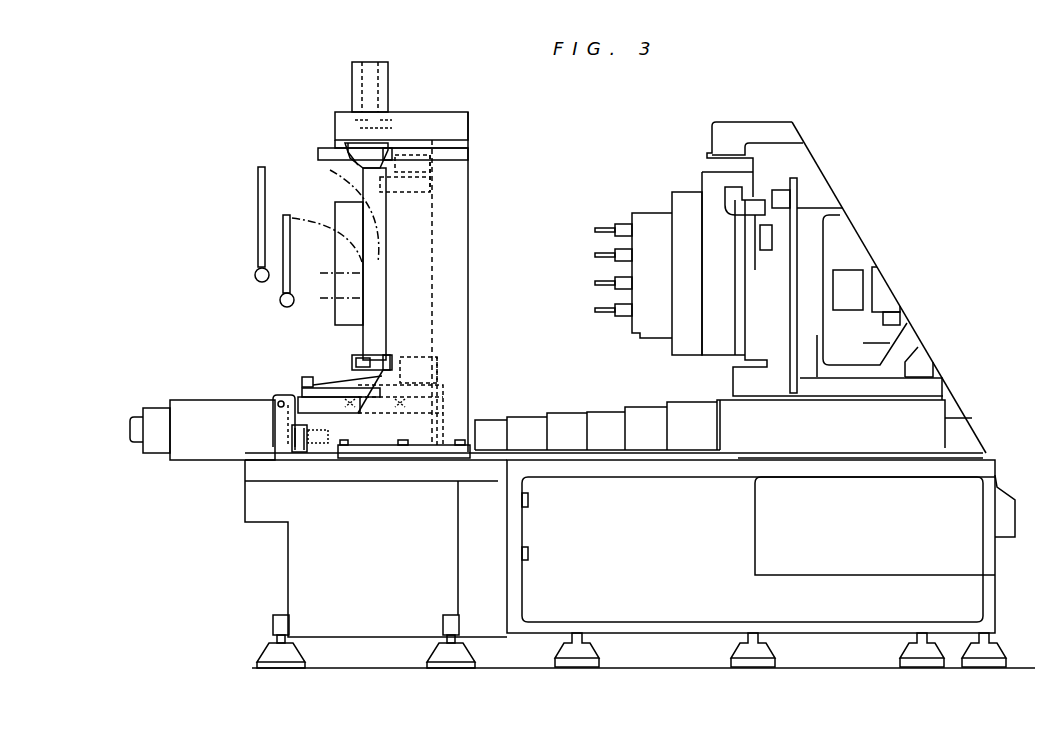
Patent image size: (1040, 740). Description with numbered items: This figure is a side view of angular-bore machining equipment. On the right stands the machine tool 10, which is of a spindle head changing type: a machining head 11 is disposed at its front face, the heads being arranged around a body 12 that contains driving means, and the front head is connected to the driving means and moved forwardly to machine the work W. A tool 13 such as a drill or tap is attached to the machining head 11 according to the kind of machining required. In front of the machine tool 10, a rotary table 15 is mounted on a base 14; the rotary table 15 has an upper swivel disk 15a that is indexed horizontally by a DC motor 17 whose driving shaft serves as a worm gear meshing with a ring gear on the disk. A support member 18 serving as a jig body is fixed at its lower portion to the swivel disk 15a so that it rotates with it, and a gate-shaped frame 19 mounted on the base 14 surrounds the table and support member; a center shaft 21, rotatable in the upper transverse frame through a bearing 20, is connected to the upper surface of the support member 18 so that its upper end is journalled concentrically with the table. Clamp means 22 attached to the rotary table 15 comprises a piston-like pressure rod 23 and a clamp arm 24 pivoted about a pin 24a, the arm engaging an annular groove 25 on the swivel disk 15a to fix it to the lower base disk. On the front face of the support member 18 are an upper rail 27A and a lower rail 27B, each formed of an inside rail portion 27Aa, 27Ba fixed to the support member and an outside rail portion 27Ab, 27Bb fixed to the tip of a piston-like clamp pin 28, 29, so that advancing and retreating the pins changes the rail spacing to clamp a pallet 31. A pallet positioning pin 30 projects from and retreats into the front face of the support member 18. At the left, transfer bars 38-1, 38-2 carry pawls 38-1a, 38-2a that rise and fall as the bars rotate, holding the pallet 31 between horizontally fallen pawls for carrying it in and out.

The machine tool 10 is at (772, 110).
The machining head 11 is at (687, 200).
The body 12 is at (857, 252).
The tool 13 is at (592, 262).
The base 14 is at (293, 552).
The rotary table 15 is at (342, 432).
The swivel disk 15a is at (312, 382).
The DC motor 17 is at (177, 435).
The support member 18 is at (432, 235).
The gate-shaped frame 19 is at (460, 127).
The bearing 20 is at (386, 65).
The center shaft 21 is at (360, 83).
The clamp means 22 is at (282, 440).
The pressure rod 23 is at (316, 445).
The clamp arm 24 is at (275, 443).
The pin 24a is at (280, 405).
The annular groove 25 is at (300, 392).
The upper rail 27A is at (348, 142).
The outside rail portion 27Ab is at (327, 117).
The inside rail portion 27Aa is at (392, 153).
The lower rail 27B is at (353, 357).
The outside rail portion 27Bb is at (335, 349).
The inside rail portion 27Ba is at (390, 357).
The clamp pin 28 is at (402, 162).
The clamp pin 29 is at (425, 383).
The pallet positioning pin 30 is at (405, 180).
The pallet 31 is at (363, 182).
The transfer bar 38-1 is at (255, 275).
The pawl 38-1a is at (258, 190).
The transfer bar 38-2 is at (280, 303).
The pawl 38-2a is at (283, 235).
The work W is at (343, 212).